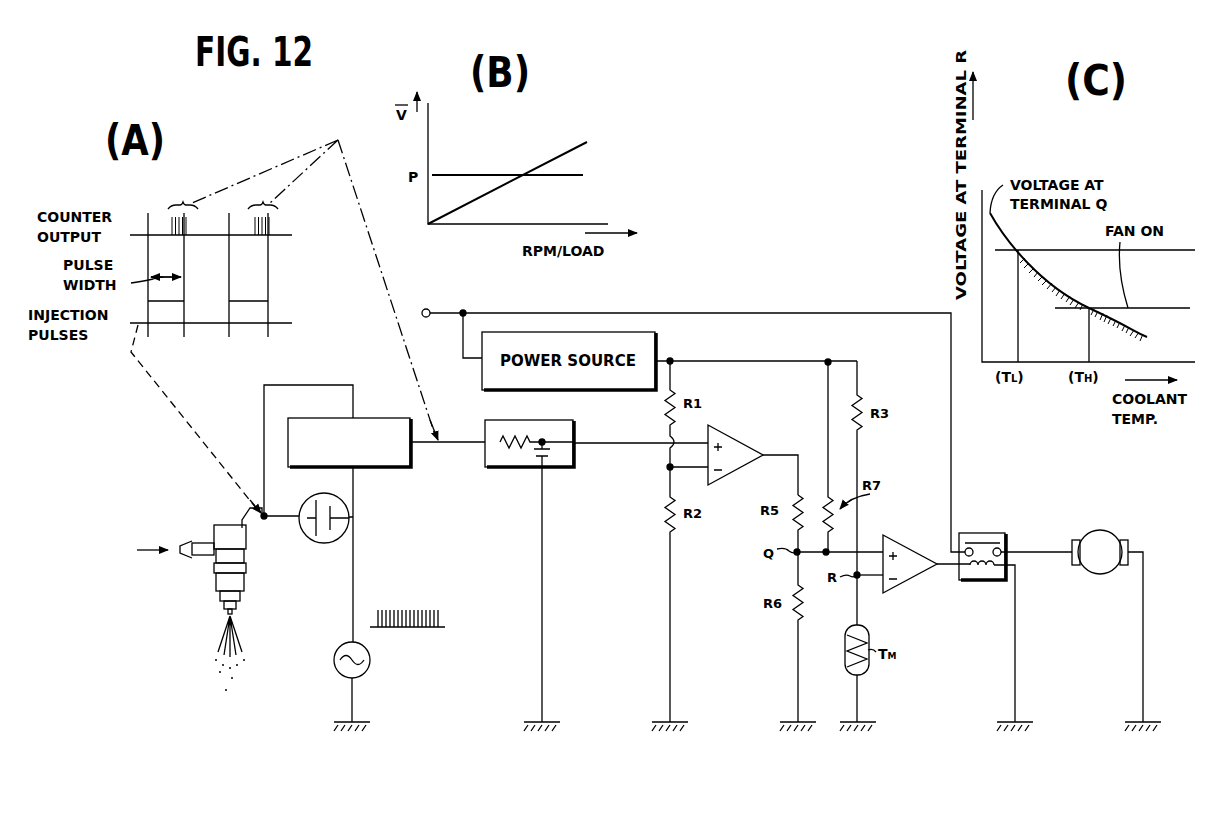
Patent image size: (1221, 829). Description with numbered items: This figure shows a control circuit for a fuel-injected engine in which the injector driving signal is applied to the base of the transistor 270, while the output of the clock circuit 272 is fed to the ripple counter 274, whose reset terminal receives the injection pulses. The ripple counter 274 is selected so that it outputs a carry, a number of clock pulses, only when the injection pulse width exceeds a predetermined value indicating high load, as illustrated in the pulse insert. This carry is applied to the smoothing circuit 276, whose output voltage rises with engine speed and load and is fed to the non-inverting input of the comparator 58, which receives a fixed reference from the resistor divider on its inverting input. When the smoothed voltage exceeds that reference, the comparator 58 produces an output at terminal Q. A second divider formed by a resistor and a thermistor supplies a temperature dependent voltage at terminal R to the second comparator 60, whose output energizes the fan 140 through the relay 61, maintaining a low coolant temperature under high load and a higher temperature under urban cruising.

The ripple counter 274 is at (381, 418).
The transistor 270 is at (350, 517).
The clock circuit 272 is at (371, 666).
The smoothing circuit 276 is at (505, 467).
The comparator 58 is at (742, 438).
The second comparator 60 is at (912, 548).
The relay 61 is at (993, 533).
The fan 140 is at (1105, 530).